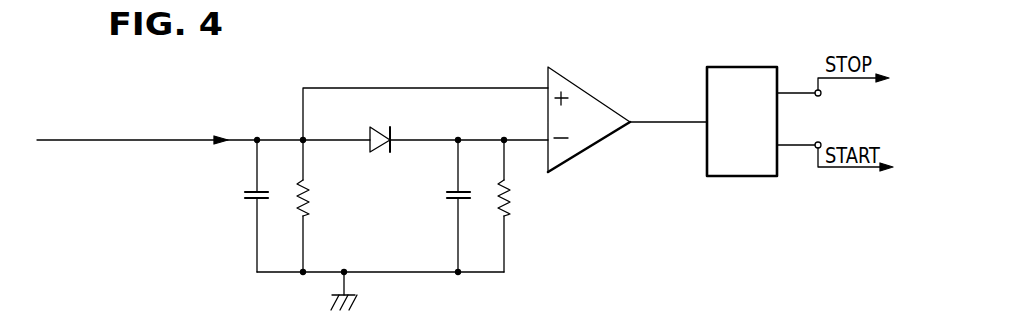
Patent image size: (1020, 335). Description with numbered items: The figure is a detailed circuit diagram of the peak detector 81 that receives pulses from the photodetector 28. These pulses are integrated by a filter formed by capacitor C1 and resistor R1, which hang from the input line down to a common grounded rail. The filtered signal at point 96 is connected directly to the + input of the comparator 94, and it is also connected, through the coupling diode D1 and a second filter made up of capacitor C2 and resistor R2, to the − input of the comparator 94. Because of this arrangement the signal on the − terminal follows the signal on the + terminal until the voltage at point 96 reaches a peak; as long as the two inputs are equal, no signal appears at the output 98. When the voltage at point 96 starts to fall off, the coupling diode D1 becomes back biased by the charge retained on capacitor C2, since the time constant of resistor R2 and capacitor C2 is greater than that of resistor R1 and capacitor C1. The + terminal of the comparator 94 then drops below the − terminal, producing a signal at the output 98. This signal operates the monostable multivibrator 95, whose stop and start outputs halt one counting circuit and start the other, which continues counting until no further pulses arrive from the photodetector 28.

The photodetector 28 is at (203, 159).
The peak detector 81 is at (421, 74).
The comparator 94 is at (591, 96).
The monostable multivibrator 95 is at (732, 66).
The point 96 is at (307, 137).
The output 98 is at (653, 121).
The capacitor C1 is at (243, 195).
The resistor R1 is at (321, 207).
The coupling diode D1 is at (459, 157).
The capacitor C2 is at (444, 197).
The resistor R2 is at (513, 203).